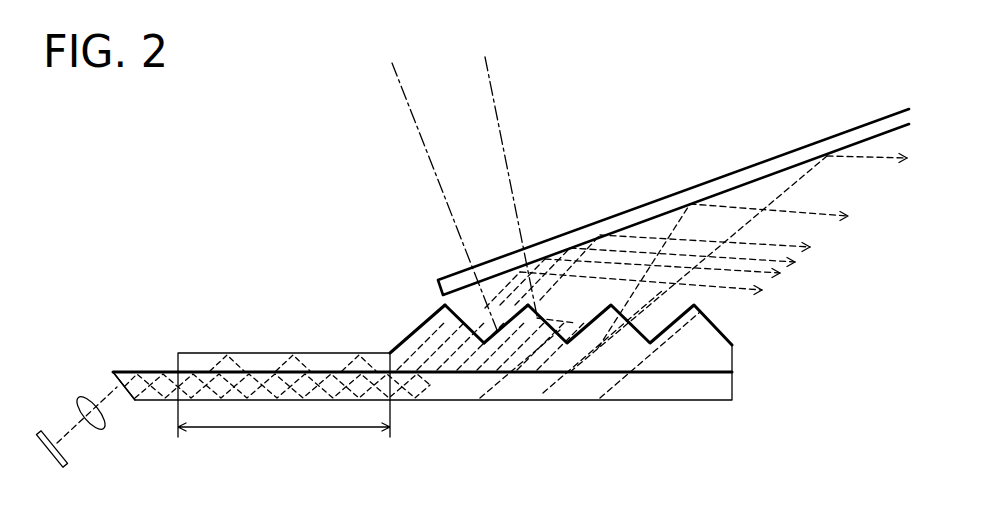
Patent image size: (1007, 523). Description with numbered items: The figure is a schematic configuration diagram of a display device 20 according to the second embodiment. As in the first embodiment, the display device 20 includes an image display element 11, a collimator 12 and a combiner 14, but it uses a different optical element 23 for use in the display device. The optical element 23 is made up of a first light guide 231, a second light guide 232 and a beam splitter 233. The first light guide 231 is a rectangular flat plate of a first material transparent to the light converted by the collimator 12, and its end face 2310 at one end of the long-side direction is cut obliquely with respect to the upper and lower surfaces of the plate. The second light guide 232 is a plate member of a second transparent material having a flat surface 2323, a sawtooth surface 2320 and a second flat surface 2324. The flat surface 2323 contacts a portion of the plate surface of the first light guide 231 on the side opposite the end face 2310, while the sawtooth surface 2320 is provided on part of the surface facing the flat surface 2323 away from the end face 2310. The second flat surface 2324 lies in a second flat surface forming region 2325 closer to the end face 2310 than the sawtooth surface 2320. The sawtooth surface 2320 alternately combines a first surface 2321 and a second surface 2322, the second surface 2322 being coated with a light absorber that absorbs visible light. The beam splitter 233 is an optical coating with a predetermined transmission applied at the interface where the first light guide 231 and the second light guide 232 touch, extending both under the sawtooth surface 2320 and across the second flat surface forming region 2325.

The display device 20 is at (104, 141).
The image display element 11 is at (68, 462).
The collimator 12 is at (107, 427).
The combiner 14 is at (855, 133).
The optical element for use in the display device 23 is at (795, 376).
The first light guide 231 is at (415, 372).
The second light guide 232 is at (505, 267).
The beam splitter 233 is at (607, 373).
The end face 2310 is at (115, 384).
The sawtooth surface 2320 is at (470, 257).
The first surface 2321 is at (455, 318).
The second surface 2322 is at (418, 323).
The flat surface 2323 is at (699, 355).
The second flat surface 2324 is at (255, 352).
The second flat surface forming region 2325 is at (284, 416).